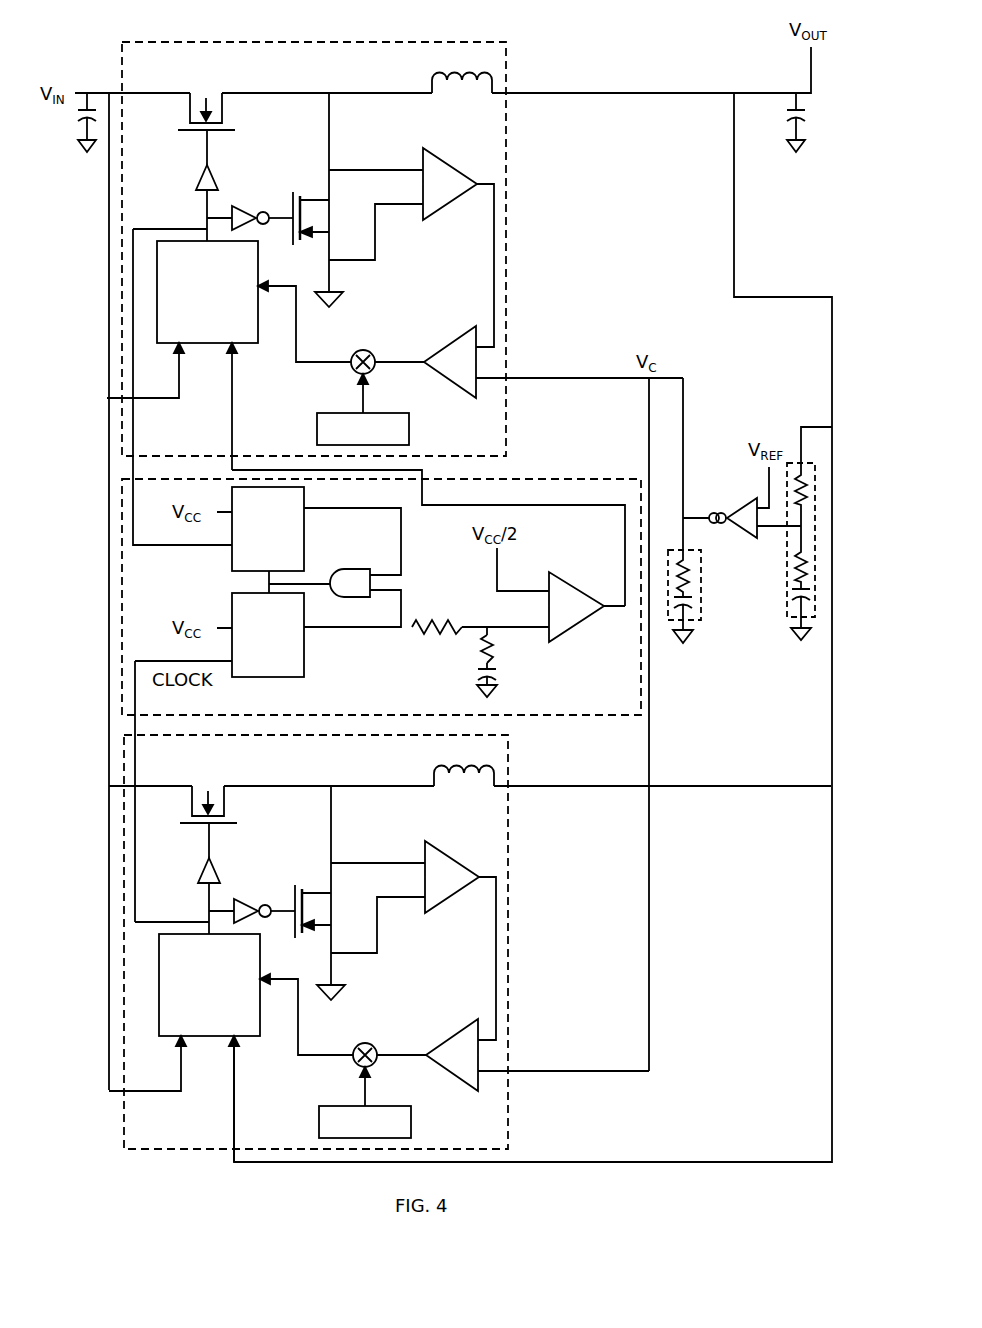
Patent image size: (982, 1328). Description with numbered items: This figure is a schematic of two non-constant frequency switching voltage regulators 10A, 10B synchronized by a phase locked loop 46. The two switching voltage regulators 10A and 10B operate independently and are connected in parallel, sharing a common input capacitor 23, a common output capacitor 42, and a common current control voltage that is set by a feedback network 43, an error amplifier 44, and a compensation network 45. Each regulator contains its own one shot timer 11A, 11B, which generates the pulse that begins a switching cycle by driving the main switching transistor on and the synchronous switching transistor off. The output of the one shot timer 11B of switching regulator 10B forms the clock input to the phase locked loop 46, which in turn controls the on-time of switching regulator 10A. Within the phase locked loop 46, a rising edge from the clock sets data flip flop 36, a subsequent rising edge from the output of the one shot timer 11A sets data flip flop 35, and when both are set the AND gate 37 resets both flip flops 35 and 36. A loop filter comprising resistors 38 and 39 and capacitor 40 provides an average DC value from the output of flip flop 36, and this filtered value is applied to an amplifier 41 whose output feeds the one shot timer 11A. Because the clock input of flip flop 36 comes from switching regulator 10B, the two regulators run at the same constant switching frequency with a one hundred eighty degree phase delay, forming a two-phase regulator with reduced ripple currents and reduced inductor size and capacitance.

The switching voltage regulator 10A is at (506, 72).
The switching voltage regulator 10B is at (350, 942).
The one shot timer 11A is at (244, 343).
The one shot timer 11B is at (222, 1013).
The input capacitor 23 is at (82, 126).
The data flip flop 35 is at (304, 540).
The data flip flop 36 is at (304, 650).
The AND gate 37 is at (362, 569).
The resistor 38 is at (418, 640).
The resistor 39 is at (492, 648).
The capacitor 40 is at (492, 682).
The comparator 41 is at (575, 630).
The output capacitor 42 is at (791, 126).
The feedback network 43 is at (787, 592).
The error amplifier 44 is at (740, 507).
The compensation network 45 is at (701, 612).
The phase locked loop 46 is at (122, 598).